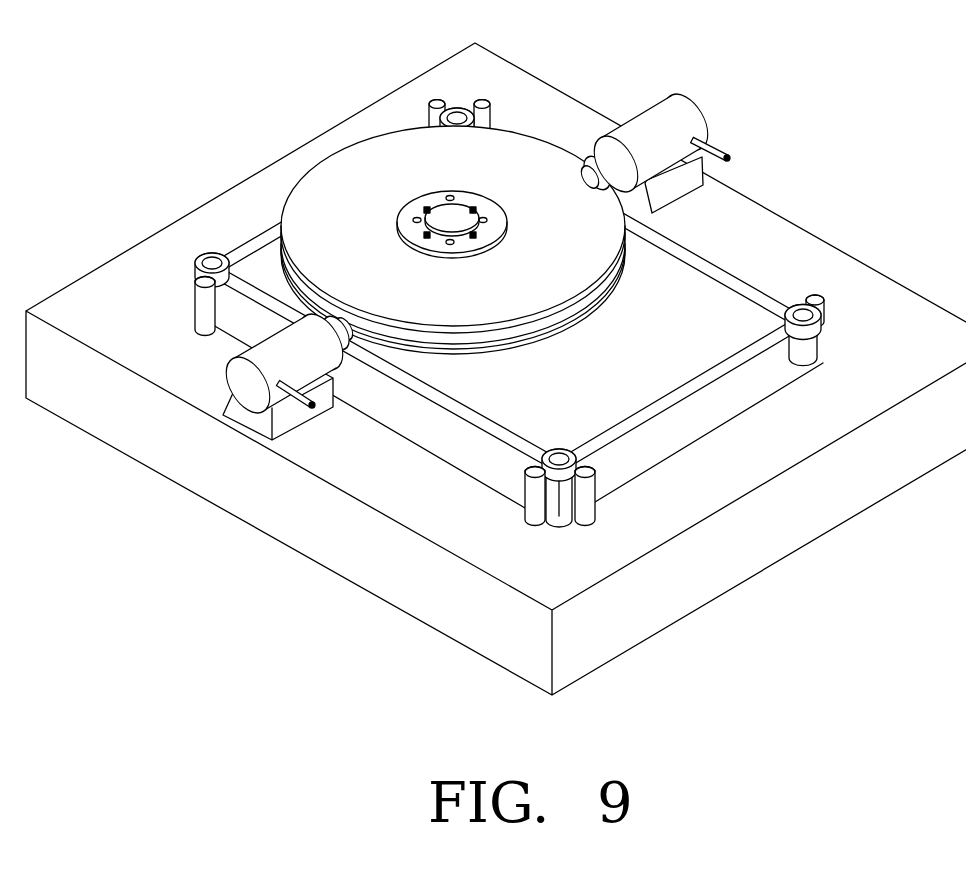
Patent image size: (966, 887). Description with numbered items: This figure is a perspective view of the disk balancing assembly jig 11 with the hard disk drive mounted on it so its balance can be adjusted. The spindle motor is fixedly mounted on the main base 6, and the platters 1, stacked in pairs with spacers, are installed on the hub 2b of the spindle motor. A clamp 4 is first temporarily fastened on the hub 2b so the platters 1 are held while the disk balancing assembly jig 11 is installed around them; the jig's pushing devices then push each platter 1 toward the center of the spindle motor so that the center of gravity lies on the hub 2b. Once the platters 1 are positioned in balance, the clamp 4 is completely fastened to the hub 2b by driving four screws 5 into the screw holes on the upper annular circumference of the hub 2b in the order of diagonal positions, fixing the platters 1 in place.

The platter 1 is at (525, 297).
The hub 2b is at (450, 220).
The clamp 4 is at (485, 203).
The screw 5 is at (476, 238).
The main base 6 is at (473, 442).
The disk balancing assembly jig 11 is at (804, 257).